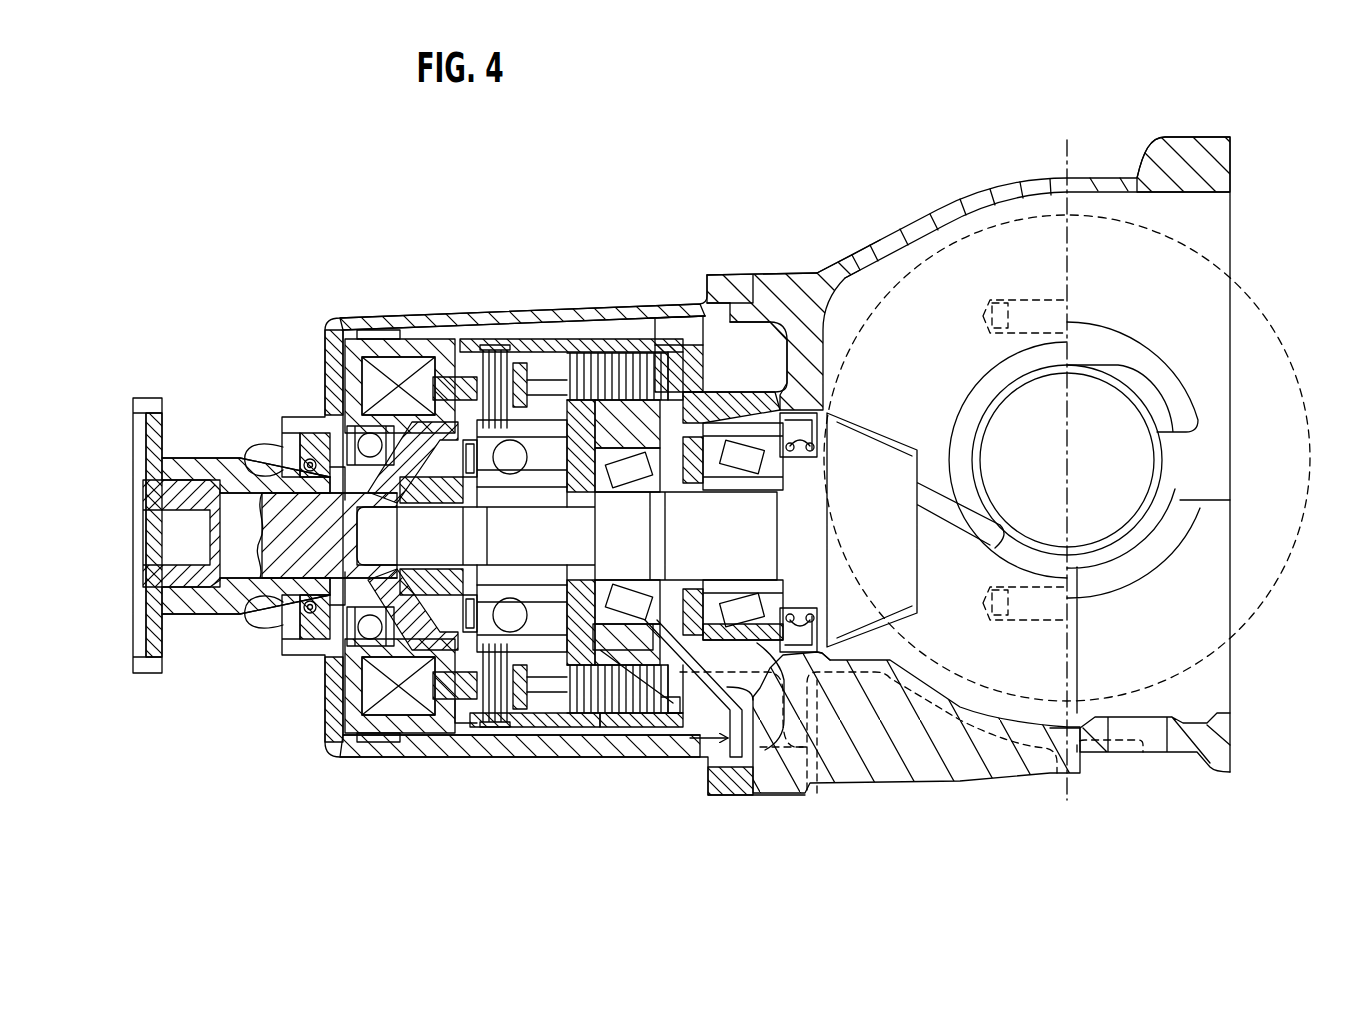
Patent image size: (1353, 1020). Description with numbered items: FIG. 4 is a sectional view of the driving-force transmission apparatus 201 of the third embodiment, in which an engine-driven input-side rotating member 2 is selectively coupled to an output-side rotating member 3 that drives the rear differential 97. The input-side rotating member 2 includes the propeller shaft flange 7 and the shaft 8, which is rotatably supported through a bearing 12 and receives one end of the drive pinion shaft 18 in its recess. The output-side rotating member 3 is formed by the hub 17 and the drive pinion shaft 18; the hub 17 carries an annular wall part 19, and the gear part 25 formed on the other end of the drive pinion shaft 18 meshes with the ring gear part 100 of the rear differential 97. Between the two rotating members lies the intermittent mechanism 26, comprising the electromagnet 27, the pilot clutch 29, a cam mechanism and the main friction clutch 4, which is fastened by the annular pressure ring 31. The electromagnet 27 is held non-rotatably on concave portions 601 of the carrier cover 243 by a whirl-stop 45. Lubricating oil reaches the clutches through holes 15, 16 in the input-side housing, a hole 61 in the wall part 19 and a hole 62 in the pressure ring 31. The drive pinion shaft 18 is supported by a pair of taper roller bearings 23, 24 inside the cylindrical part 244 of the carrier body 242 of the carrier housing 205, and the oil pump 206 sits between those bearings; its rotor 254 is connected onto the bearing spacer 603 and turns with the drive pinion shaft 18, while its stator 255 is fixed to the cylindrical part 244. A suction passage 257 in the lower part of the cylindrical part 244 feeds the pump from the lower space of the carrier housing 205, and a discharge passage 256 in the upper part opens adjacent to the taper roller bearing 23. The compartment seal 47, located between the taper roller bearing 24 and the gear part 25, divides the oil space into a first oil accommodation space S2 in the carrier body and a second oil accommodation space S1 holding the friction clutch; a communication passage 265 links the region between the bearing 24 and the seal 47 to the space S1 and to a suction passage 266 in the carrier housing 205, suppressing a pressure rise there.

The input-side rotating member 2 is at (207, 451).
The output-side rotating member 3 is at (434, 606).
The main clutch 4 is at (640, 336).
The propeller shaft flange 7 is at (193, 608).
The shaft 8 is at (276, 552).
The bearing 12 is at (378, 466).
The hole 15 is at (500, 727).
The hole 16 is at (613, 718).
The hub 17 is at (522, 492).
The drive pinion shaft 18 is at (556, 553).
The annular wall part 19 is at (607, 500).
The taper roller bearing 23 is at (634, 494).
The taper roller bearing 24 is at (753, 486).
The gear part 25 is at (892, 450).
The intermittent mechanism 26 is at (583, 737).
The electromagnet 27 is at (406, 317).
The pilot clutch 29 is at (473, 378).
The annular pressure ring 31 is at (548, 344).
The whirl-stop 45 is at (378, 350).
The compartment seal 47 is at (790, 459).
The hole 61 is at (582, 346).
The hole 62 is at (545, 344).
The rear differential 97 is at (990, 179).
The ring gear part 100 is at (1267, 313).
The driving-force transmission apparatus 201 is at (673, 168).
The carrier housing 205 is at (743, 268).
The oil pump 206 is at (681, 488).
The carrier body 242 is at (793, 292).
The housing flange 243 is at (712, 286).
The cylindrical part 244 is at (672, 698).
The rotor 254 is at (718, 592).
The stator 255 is at (796, 604).
The discharge passage 256 is at (688, 344).
The suction passage 257 is at (760, 712).
The communication passage 265 is at (832, 780).
The suction passage 266 is at (812, 762).
The concave portions 601 is at (433, 330).
The bearing spacer 603 is at (731, 407).
The second oil accommodation space S1 is at (727, 323).
The first oil accommodation space S2 is at (866, 276).